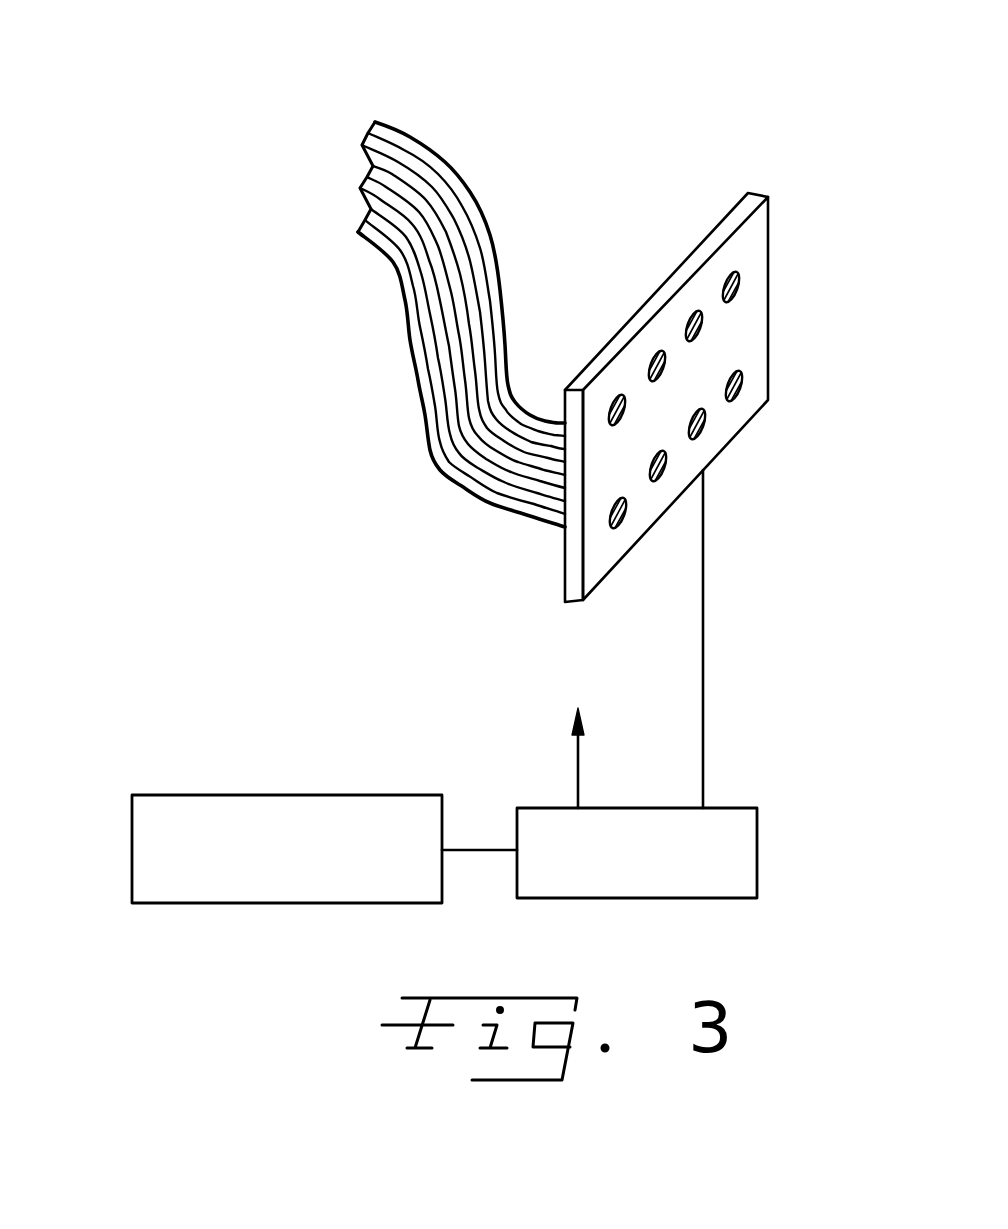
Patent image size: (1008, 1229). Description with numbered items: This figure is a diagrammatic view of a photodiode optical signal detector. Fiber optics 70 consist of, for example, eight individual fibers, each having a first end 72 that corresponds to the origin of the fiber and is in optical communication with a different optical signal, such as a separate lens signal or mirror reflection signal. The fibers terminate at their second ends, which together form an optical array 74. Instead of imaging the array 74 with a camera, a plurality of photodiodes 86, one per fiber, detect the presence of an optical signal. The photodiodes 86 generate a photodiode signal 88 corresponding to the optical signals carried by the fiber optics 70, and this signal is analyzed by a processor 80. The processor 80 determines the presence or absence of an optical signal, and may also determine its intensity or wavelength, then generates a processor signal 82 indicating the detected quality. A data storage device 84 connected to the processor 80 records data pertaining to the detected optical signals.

The fiber optics 70 is at (453, 168).
The first end 72 is at (390, 137).
The optical array 74 is at (748, 255).
The photodiodes 86 is at (617, 397).
The photodiode signal 88 is at (704, 625).
The processor signal 82 is at (575, 763).
The data storage device 84 is at (272, 793).
The processor 80 is at (757, 852).